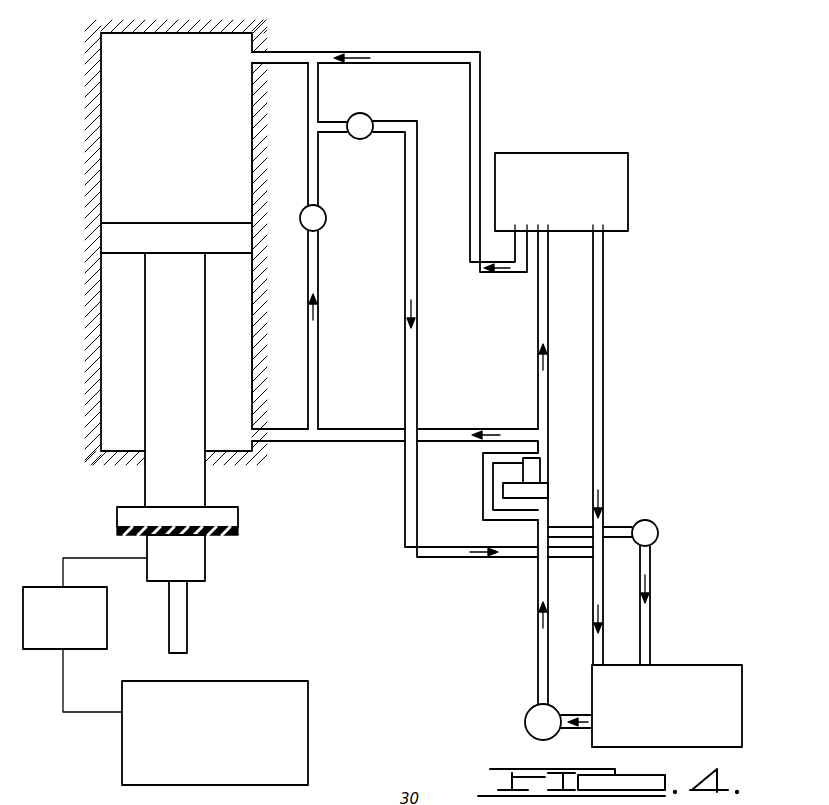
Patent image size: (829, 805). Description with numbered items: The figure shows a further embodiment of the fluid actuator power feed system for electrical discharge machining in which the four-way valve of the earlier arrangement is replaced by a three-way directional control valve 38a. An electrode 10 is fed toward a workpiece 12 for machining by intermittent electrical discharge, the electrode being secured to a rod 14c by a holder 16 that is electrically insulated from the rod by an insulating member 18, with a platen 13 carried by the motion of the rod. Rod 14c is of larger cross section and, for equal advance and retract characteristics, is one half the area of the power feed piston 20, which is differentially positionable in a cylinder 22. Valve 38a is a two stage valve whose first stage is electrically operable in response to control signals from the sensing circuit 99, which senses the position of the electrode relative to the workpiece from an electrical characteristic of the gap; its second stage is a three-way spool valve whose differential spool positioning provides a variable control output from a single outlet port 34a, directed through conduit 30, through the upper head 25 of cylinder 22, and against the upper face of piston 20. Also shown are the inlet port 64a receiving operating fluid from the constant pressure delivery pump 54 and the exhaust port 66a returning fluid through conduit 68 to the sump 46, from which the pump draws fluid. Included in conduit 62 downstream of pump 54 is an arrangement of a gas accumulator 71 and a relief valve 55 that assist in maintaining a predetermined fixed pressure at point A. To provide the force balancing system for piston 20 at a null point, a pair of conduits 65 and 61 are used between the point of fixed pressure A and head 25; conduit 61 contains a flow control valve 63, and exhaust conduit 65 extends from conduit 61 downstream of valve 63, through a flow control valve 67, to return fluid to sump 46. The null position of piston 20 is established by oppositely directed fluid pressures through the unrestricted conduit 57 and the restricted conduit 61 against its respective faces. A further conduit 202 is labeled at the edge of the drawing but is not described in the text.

The upper head 25 is at (182, 40).
The cylinder 22 is at (254, 151).
The power feed piston 20 is at (250, 243).
The rod 14c is at (205, 373).
The platen 13 is at (238, 517).
The insulating member 18 is at (238, 531).
The holder 16 is at (205, 558).
The electrode 10 is at (187, 620).
The workpiece 12 is at (230, 683).
The sensing circuit 99 is at (85, 635).
The conduit 30 is at (481, 112).
The conduit 61 is at (318, 296).
The flow control valve 63 is at (327, 218).
The exhaust conduit 65 is at (335, 135).
The flow control valve 67 is at (370, 118).
The three-way directional control valve 38a is at (632, 172).
The outlet port 34a is at (521, 231).
The inlet port 64a is at (545, 231).
The exhaust port 66a is at (597, 231).
The conduit 62 is at (548, 340).
The conduit 68 is at (603, 335).
The conduit 57 is at (340, 435).
The point of fixed pressure A is at (551, 437).
The gas accumulator 71 is at (528, 475).
The relief valve 55 is at (652, 524).
The constant pressure delivery pump 54 is at (525, 722).
The sump 46 is at (667, 706).
The conduit 202 is at (341, 804).